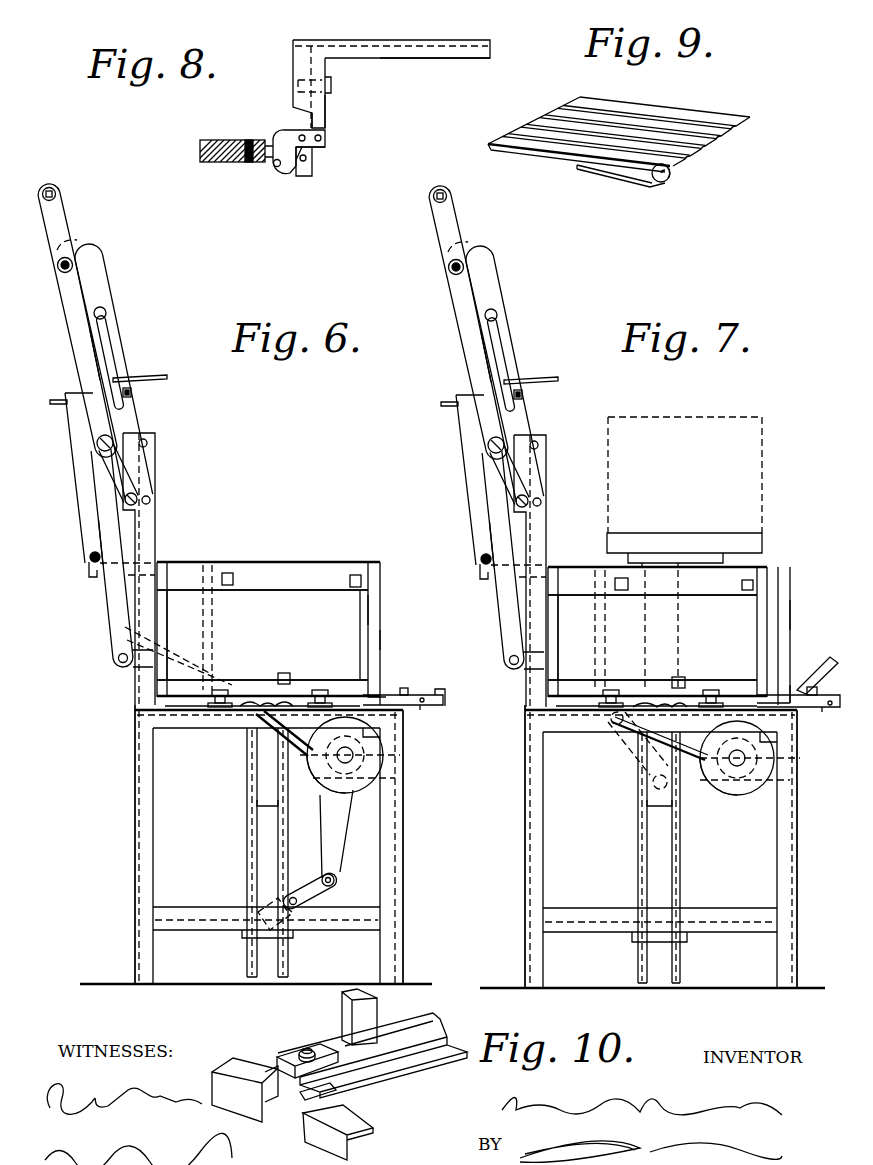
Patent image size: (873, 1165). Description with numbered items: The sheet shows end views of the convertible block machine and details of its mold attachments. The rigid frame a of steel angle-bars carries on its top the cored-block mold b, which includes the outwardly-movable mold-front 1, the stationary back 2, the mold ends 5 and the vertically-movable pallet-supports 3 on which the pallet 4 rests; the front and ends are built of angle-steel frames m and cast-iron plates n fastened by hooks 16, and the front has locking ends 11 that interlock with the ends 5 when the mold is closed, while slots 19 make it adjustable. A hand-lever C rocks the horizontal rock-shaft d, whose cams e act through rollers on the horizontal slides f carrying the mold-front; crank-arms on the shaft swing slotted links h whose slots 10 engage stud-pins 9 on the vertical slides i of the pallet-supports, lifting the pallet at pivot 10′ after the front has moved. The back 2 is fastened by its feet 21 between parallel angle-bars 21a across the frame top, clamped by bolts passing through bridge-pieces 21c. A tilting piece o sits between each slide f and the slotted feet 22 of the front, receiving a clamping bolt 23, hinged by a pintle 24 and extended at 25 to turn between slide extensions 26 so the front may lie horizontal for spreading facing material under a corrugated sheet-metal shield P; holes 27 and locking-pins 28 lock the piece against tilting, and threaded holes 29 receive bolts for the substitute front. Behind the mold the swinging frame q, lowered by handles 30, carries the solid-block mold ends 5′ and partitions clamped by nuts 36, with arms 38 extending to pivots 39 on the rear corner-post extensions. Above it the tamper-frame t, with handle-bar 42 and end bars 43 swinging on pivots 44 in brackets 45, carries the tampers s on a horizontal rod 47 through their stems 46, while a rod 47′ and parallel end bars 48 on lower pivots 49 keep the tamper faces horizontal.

In FIG. 8, the mold-front 1 is at (435, 70).
In FIG. 6, the mold-front 1 is at (381, 641).
In FIG. 7, the mold-front 1 is at (791, 619).
In FIG. 6, the mold-back 2 is at (204, 582).
In FIG. 7, the mold-back 2 is at (596, 649).
In FIG. 10, the mold-back 2 is at (380, 1005).
In FIG. 6, the pallet-supports 3 is at (270, 833).
In FIG. 7, the pallet-supports 3 is at (660, 818).
In FIG. 7, the pallet 4 is at (760, 541).
In FIG. 6, the mold ends 5 is at (262, 654).
In FIG. 7, the mold ends 5 is at (652, 664).
In FIG. 6, the stud-pins 9 is at (265, 912).
In FIG. 7, the stud-pins 9 is at (655, 787).
In FIG. 7, the slots of the links 10 is at (645, 745).
In FIG. 6, the lever pivot 10′ is at (296, 906).
In FIG. 8, the locking ends 11 is at (389, 42).
In FIG. 6, the locking ends 11 is at (371, 609).
In FIG. 6, the hooks 16 is at (350, 580).
In FIG. 7, the hooks 16 is at (742, 588).
In FIG. 6, the slots 19 is at (360, 825).
In FIG. 10, the feet of the back 21 is at (325, 1072).
In FIG. 10, the angle-bars 21a is at (433, 1053).
In FIG. 10, the bridge-pieces 21c is at (337, 1093).
In FIG. 8, the slotted feet 22 is at (316, 112).
In FIG. 6, the slotted feet 22 is at (386, 690).
In FIG. 7, the slotted feet 22 is at (797, 685).
In FIG. 8, the vertical bolt 23 is at (332, 84).
In FIG. 6, the vertical bolt 23 is at (405, 689).
In FIG. 7, the vertical bolt 23 is at (815, 687).
In FIG. 8, the horizontal pintle 24 is at (299, 134).
In FIG. 8, the extension of tilting piece 25 is at (311, 170).
In FIG. 8, the extensions of the slide sides 26 is at (326, 144).
In FIG. 8, the holes 27 is at (322, 137).
In FIG. 6, the locking-pins 28 is at (443, 698).
In FIG. 8, the threaded holes 29 is at (250, 141).
In FIG. 6, the handles 30 is at (131, 393).
In FIG. 7, the handles 30 is at (552, 405).
In FIG. 6, the clamping-nuts 36 is at (93, 578).
In FIG. 7, the clamping-nuts 36 is at (493, 566).
In FIG. 6, the arms 38 is at (116, 621).
In FIG. 7, the arms 38 is at (494, 560).
In FIG. 6, the pivots of swinging frame 39 is at (118, 666).
In FIG. 7, the pivots of swinging frame 39 is at (518, 677).
In FIG. 6, the handle-bar 42 is at (58, 199).
In FIG. 7, the handle-bar 42 is at (422, 218).
In FIG. 6, the end bars 43 is at (70, 316).
In FIG. 7, the end bars 43 is at (468, 322).
In FIG. 6, the tamper-frame pivots 44 is at (98, 446).
In FIG. 7, the tamper-frame pivots 44 is at (469, 450).
In FIG. 6, the brackets 45 is at (108, 468).
In FIG. 7, the brackets 45 is at (481, 475).
In FIG. 6, the stem 46 is at (92, 280).
In FIG. 7, the stem 46 is at (505, 374).
In FIG. 6, the horizontal rod 47 is at (59, 271).
In FIG. 7, the horizontal rod 47 is at (436, 266).
In FIG. 6, the rod 47′ is at (107, 314).
In FIG. 7, the rod 47′ is at (520, 321).
In FIG. 6, the end bars 48 is at (108, 361).
In FIG. 7, the end bars 48 is at (541, 364).
In FIG. 6, the lower pivots 49 is at (150, 502).
In FIG. 7, the lower pivots 49 is at (548, 492).
In FIG. 6, the mold ends 5′ is at (75, 422).
In FIG. 7, the mold ends 5′ is at (455, 480).
In FIG. 6, the frame a is at (135, 793).
In FIG. 7, the frame a is at (527, 733).
In FIG. 10, the frame a is at (230, 1067).
In FIG. 6, the mold b is at (337, 568).
In FIG. 7, the mold b is at (804, 582).
In FIG. 10, the mold b is at (305, 1050).
In FIG. 6, the hand-lever C is at (130, 637).
In FIG. 7, the hand-lever C is at (817, 666).
In FIG. 6, the rock-shaft d is at (353, 756).
In FIG. 7, the rock-shaft d is at (746, 758).
In FIG. 6, the cams e is at (320, 783).
In FIG. 7, the cams e is at (742, 800).
In FIG. 8, the horizontal slides f is at (255, 164).
In FIG. 6, the horizontal slides f is at (430, 708).
In FIG. 7, the horizontal slides f is at (828, 712).
In FIG. 6, the link h is at (312, 884).
In FIG. 7, the link h is at (618, 736).
In FIG. 6, the vertical slides i is at (265, 803).
In FIG. 7, the vertical slides i is at (665, 838).
In FIG. 6, the bolt k is at (268, 700).
In FIG. 7, the bolt k is at (662, 703).
In FIG. 6, the frames m is at (318, 587).
In FIG. 7, the frames m is at (755, 635).
In FIG. 6, the plates n is at (215, 635).
In FIG. 7, the plates n is at (592, 637).
In FIG. 8, the tilting piece o is at (292, 69).
In FIG. 6, the tilting piece o is at (408, 698).
In FIG. 7, the tilting piece o is at (818, 720).
In FIG. 9, the sheet-metal shield P is at (573, 108).
In FIG. 6, the swinging frame q is at (107, 538).
In FIG. 7, the swinging frame q is at (484, 565).
In FIG. 6, the tampers s is at (149, 384).
In FIG. 7, the tampers s is at (535, 390).
In FIG. 6, the tamper-frame t is at (80, 341).
In FIG. 7, the tamper-frame t is at (509, 356).